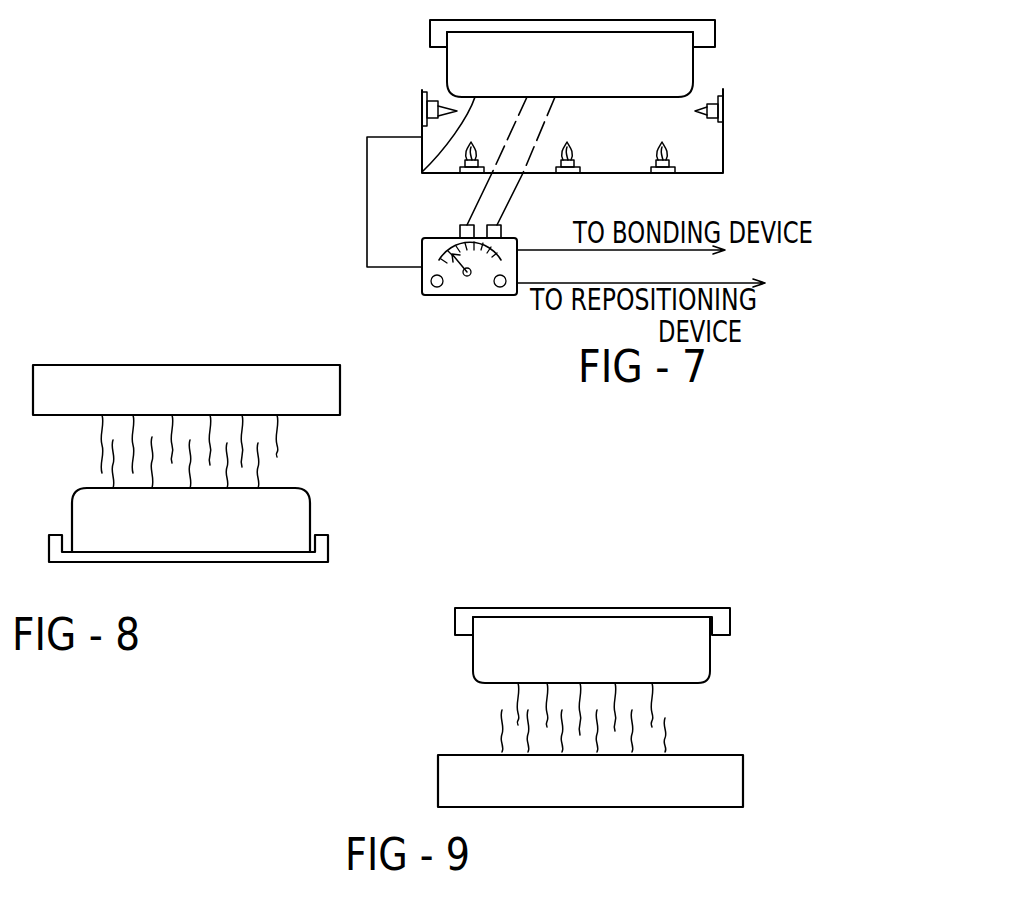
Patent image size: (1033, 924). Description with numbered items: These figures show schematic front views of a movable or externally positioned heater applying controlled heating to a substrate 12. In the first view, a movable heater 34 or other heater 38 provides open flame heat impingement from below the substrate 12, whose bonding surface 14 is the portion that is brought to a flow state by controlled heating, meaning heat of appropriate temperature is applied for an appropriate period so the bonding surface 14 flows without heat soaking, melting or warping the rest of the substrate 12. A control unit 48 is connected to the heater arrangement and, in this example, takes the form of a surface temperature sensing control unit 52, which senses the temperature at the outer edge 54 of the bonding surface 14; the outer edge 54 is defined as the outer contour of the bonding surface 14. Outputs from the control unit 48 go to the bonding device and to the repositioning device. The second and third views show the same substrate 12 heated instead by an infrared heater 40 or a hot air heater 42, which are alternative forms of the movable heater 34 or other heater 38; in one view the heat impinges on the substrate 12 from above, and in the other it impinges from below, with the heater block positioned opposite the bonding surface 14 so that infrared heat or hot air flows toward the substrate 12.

In FIG. 7, the substrate 12 is at (693, 70).
In FIG. 8, the substrate 12 is at (291, 491).
In FIG. 9, the substrate 12 is at (710, 665).
In FIG. 7, the bonding surface 14 is at (423, 176).
In FIG. 7, the movable heater 34 is at (613, 120).
In FIG. 8, the movable heater 34 is at (186, 366).
In FIG. 9, the movable heater 34 is at (507, 729).
In FIG. 7, the other heater 38 is at (766, 138).
In FIG. 8, the other heater 38 is at (186, 366).
In FIG. 9, the other heater 38 is at (507, 729).
In FIG. 8, the infrared heater 40 is at (186, 366).
In FIG. 9, the infrared heater 40 is at (507, 729).
In FIG. 8, the hot air heater 42 is at (95, 352).
In FIG. 9, the hot air heater 42 is at (473, 657).
In FIG. 7, the control unit 48 is at (510, 196).
In FIG. 7, the surface temperature sensing control unit 52 is at (520, 238).
In FIG. 7, the outer edge 54 is at (608, 98).